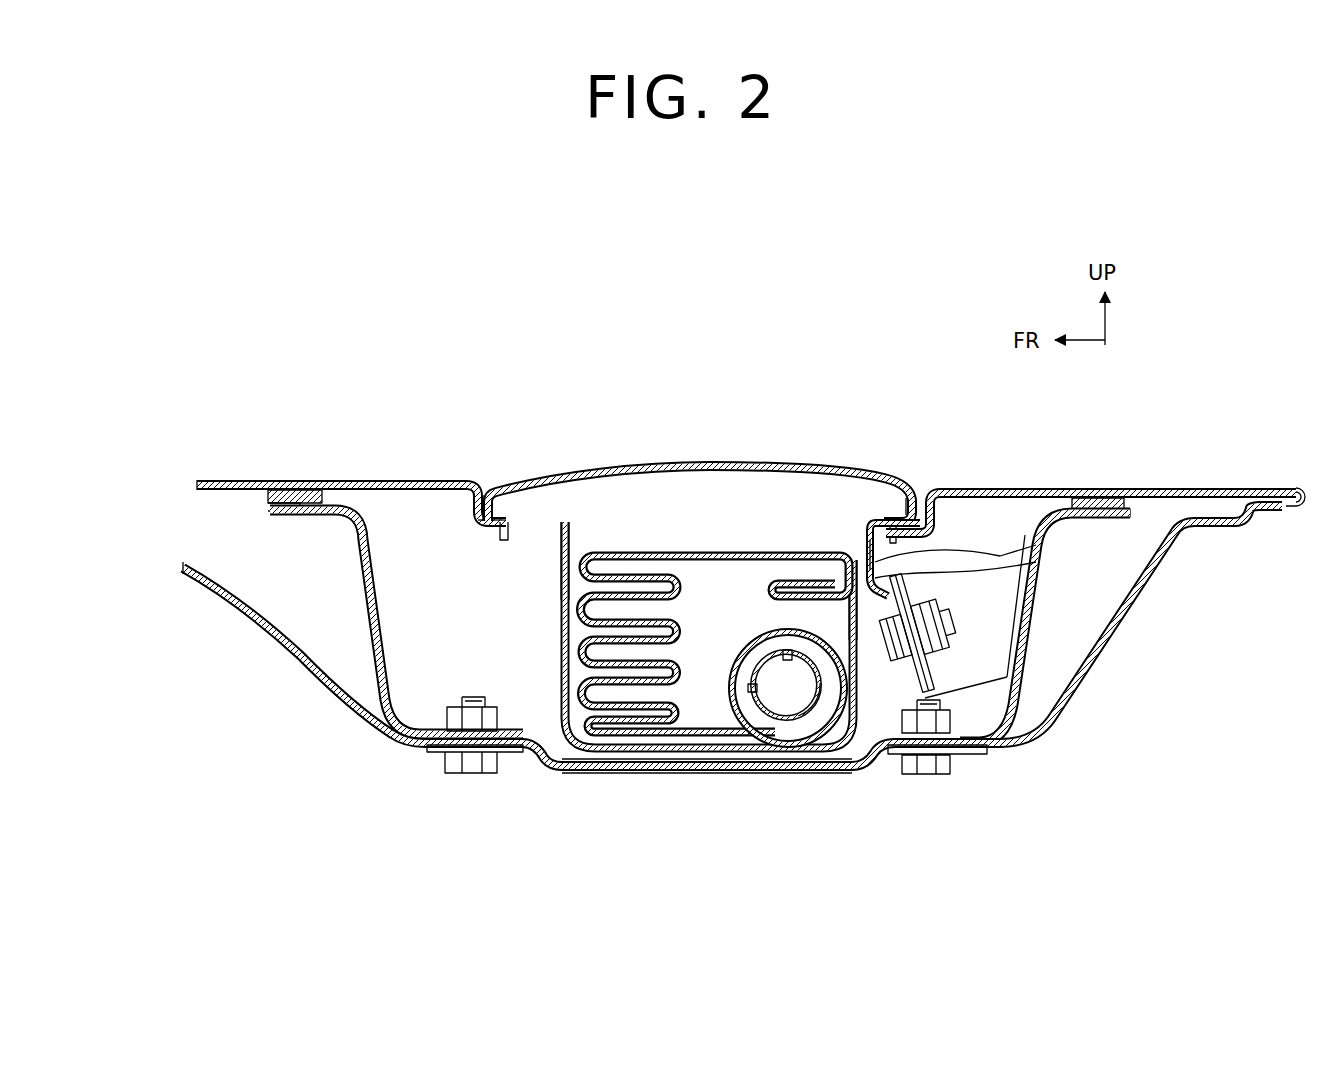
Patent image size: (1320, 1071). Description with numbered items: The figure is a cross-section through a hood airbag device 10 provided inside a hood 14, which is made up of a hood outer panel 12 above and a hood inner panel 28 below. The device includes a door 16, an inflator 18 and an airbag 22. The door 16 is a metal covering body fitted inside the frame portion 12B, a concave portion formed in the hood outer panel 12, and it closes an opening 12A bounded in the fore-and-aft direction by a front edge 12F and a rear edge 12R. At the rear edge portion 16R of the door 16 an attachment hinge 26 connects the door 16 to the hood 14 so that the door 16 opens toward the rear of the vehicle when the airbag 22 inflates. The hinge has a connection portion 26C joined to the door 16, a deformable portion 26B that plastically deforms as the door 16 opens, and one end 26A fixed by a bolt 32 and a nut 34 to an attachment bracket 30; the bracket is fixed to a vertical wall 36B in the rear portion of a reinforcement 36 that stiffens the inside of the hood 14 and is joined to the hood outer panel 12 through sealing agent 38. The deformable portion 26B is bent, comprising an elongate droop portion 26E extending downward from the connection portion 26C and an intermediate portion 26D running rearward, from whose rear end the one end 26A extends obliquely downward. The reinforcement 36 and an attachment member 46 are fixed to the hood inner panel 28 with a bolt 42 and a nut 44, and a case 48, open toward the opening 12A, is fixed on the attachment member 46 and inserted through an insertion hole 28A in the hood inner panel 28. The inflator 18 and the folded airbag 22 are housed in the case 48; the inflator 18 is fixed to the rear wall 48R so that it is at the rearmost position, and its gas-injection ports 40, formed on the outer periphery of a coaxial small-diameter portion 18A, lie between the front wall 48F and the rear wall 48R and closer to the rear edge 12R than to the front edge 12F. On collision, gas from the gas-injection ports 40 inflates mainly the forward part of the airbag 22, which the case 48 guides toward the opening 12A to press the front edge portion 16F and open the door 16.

The hood airbag device 10 is at (713, 408).
The hood outer panel 12 is at (400, 478).
The opening 12A is at (535, 525).
The frame portion 12B is at (477, 523).
The front edge 12F is at (506, 536).
The rear edge 12R is at (893, 535).
The hood 14 is at (290, 436).
The door 16 is at (662, 465).
The front edge portion 16F is at (470, 500).
The rear edge portion 16R is at (912, 522).
The inflator 18 is at (738, 636).
The small-diameter portion 18A is at (762, 630).
The airbag 22 is at (708, 551).
The attachment hinge 26 is at (855, 518).
The one end 26A is at (900, 685).
The deformable portion 26B is at (1100, 533).
The connection portion 26C is at (873, 522).
The intermediate portion 26D is at (1030, 575).
The droop portion 26E is at (1030, 551).
The hood inner panel 28 is at (283, 642).
The insertion hole 28A is at (868, 752).
The attachment bracket 30 is at (1021, 548).
The bolt 32 is at (913, 612).
The nut 34 is at (938, 622).
The reinforcement 36 is at (360, 600).
The vertical wall 36B is at (1033, 606).
The sealing agent 38 is at (275, 504).
The gas-injection ports 40 is at (785, 650).
The bolt 42 is at (475, 778).
The nut 44 is at (455, 718).
The attachment member 46 is at (712, 770).
The case 48 is at (561, 648).
The front wall 48F is at (563, 620).
The rear wall 48R is at (846, 585).